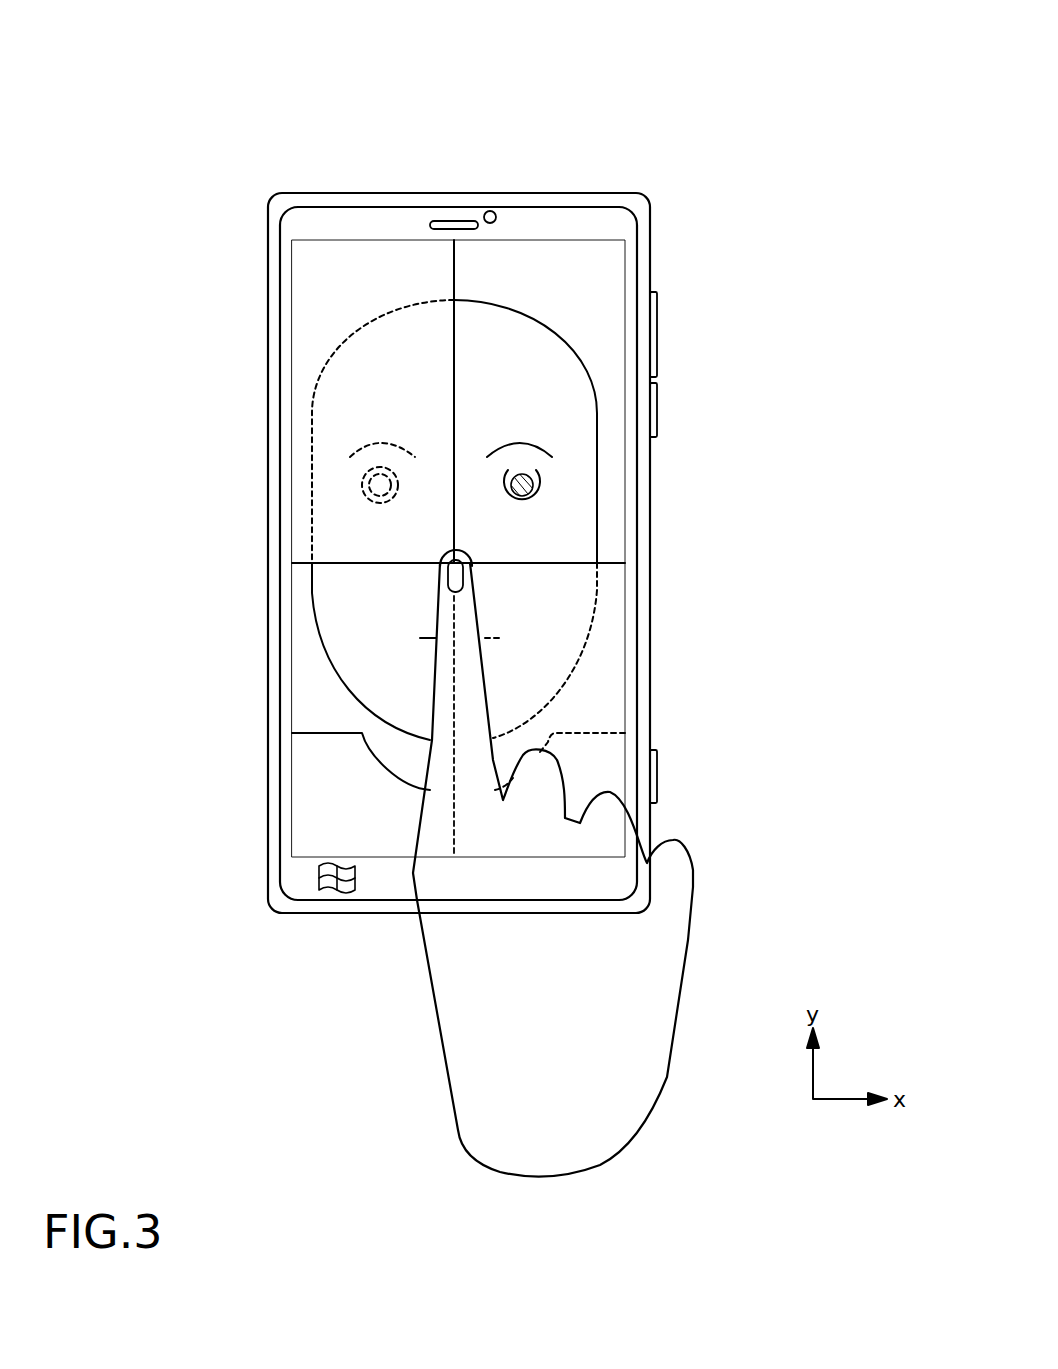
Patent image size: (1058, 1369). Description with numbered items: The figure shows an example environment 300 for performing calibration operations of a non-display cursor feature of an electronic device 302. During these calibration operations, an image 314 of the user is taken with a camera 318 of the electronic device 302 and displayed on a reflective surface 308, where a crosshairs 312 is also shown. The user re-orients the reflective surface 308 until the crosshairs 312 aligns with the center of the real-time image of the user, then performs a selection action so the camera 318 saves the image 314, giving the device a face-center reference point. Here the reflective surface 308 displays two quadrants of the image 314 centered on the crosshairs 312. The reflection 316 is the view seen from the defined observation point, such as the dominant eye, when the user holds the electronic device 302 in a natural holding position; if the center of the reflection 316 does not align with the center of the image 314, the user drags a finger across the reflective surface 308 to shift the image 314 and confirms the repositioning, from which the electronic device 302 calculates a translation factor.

The example environment 300 is at (800, 70).
The electronic device 302 is at (650, 477).
The reflective surface 308 is at (533, 273).
The crosshairs 312 is at (454, 297).
The image 314 is at (557, 337).
The reflection 316 is at (360, 332).
The camera 318 is at (488, 208).